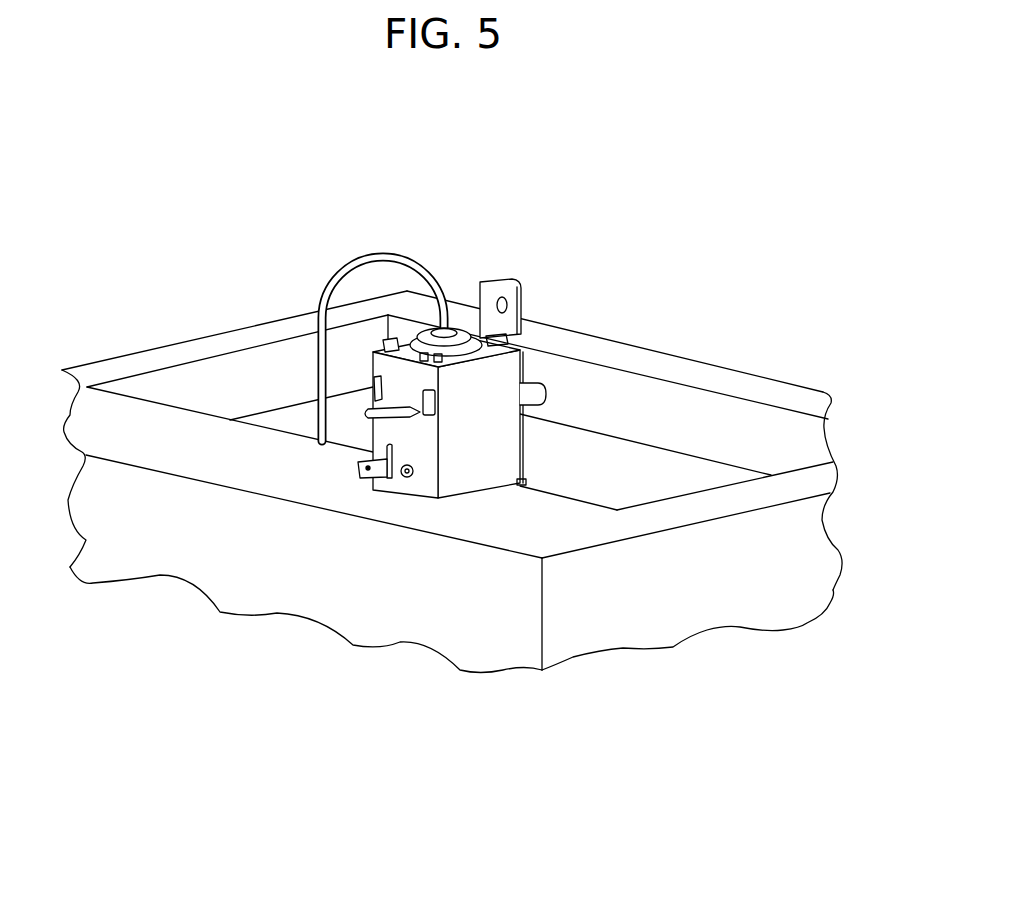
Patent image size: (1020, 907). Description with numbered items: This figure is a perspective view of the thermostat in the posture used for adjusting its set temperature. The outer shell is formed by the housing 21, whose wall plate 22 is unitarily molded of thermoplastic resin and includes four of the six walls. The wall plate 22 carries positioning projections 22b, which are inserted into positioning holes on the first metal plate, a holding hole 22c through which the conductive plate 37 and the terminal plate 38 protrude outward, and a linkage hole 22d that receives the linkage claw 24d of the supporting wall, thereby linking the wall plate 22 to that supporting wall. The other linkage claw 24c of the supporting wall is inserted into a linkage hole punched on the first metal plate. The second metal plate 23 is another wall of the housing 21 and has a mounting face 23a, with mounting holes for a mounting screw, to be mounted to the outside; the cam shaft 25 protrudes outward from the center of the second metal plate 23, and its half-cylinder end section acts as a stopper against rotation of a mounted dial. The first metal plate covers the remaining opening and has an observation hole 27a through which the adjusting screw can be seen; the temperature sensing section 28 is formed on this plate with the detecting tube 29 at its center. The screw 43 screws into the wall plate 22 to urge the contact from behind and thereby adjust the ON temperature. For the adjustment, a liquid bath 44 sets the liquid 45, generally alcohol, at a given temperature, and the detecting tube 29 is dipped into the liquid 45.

The housing 21 is at (532, 372).
The wall plate 22 is at (500, 453).
The positioning projections 22b is at (374, 376).
The holding hole 22c is at (391, 479).
The linkage hole 22d is at (374, 420).
The second metal plate 23 is at (517, 272).
The mounting face 23a is at (527, 297).
The linkage claw 24c is at (385, 338).
The linkage claw 24d is at (372, 386).
The cam shaft 25 is at (528, 393).
The observation hole 27a is at (480, 280).
The temperature sensing section 28 is at (437, 327).
The detecting tube 29 is at (353, 257).
The conductive plate 37 is at (372, 420).
The terminal plate 38 is at (379, 468).
The screw 43 is at (408, 477).
The liquid bath 44 is at (757, 560).
The liquid 45 is at (670, 472).